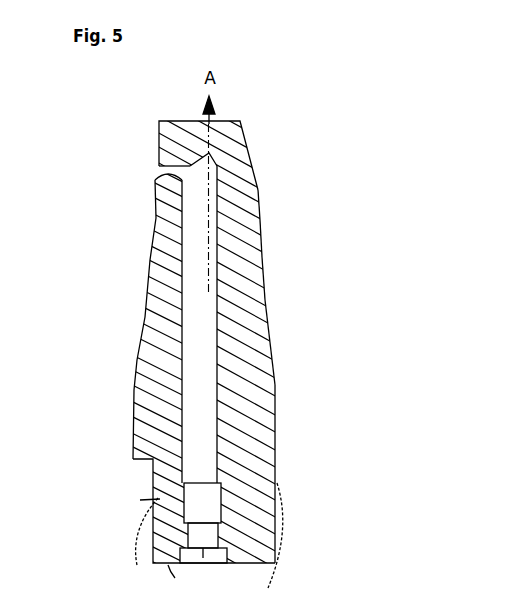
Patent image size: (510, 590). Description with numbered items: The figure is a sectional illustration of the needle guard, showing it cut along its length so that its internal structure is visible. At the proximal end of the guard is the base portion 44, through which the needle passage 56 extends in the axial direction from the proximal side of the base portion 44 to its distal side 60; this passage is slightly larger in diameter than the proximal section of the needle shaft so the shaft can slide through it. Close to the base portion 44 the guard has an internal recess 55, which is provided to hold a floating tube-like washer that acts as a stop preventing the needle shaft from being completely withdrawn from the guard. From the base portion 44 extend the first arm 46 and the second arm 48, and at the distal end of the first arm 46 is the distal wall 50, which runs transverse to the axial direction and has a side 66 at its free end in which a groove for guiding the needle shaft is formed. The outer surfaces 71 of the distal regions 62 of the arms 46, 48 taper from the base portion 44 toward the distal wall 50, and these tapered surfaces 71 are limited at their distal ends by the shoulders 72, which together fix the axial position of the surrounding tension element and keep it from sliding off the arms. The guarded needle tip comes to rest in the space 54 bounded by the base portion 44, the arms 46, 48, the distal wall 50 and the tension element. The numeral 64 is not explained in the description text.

The base portion 44 is at (262, 541).
The first arm 46 is at (265, 300).
The second arm 48 is at (145, 317).
The distal wall 50 is at (240, 121).
The space 54 is at (165, 358).
The internal recess 55 is at (223, 506).
The needle passage 56 is at (225, 552).
The distal side 60 is at (230, 490).
The distal region 62 is at (263, 255).
The lower outer wall 64 is at (277, 392).
The side 66 is at (159, 141).
The tapered outer surface 71 is at (152, 257).
The shoulder 72 is at (157, 218).